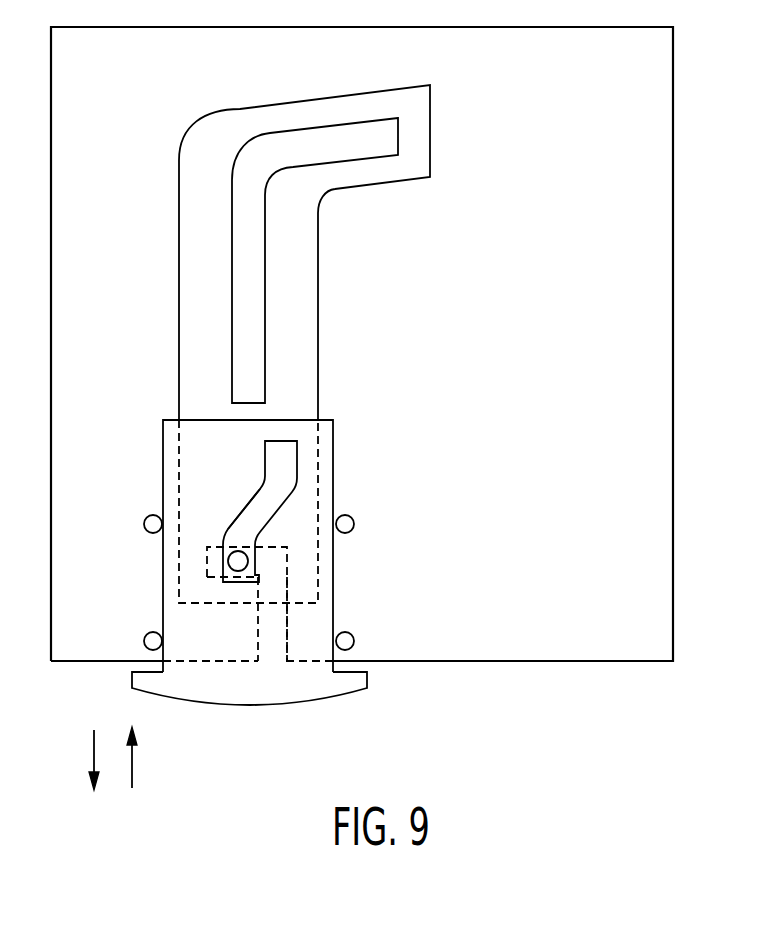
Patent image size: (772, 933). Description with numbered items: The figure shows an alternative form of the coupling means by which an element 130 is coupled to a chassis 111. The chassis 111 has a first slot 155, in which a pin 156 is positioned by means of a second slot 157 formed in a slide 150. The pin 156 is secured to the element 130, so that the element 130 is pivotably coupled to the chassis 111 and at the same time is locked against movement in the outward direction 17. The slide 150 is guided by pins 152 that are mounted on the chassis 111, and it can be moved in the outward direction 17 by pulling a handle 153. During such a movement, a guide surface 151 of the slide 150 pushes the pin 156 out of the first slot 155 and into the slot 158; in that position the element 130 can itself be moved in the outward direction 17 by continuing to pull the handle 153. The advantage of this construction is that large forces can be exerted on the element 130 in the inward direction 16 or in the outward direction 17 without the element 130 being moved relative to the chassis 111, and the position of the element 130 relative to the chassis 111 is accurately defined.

The chassis 111 is at (675, 530).
The element 130 is at (318, 278).
The slide 150 is at (335, 463).
The guide surface 151 is at (243, 509).
The pins 152 is at (355, 524).
The handle 153 is at (207, 677).
The first slot 155 is at (208, 561).
The pin 156 is at (238, 572).
The second slot 157 is at (281, 452).
The slot 158 is at (270, 630).
The inward direction 16 is at (133, 770).
The outward direction 17 is at (92, 745).